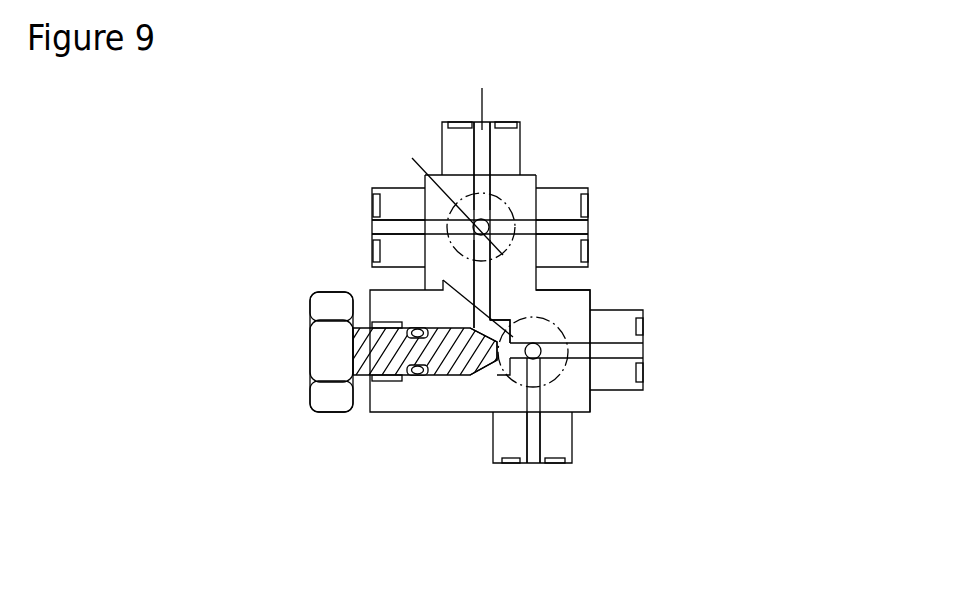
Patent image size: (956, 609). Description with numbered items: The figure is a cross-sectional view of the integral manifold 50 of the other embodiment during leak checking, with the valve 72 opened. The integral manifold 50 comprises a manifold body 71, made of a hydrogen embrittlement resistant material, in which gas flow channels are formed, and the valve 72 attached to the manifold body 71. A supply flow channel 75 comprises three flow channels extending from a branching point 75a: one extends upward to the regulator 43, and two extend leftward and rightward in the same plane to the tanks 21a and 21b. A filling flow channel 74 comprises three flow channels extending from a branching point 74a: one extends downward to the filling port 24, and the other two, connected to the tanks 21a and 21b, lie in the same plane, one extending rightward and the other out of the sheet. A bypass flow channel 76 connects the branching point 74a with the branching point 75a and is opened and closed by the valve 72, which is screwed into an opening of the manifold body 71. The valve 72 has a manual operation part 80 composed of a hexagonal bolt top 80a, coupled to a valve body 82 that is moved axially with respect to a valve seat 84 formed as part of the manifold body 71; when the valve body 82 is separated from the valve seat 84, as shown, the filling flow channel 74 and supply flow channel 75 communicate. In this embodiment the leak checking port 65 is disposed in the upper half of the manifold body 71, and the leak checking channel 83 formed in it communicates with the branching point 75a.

The integral manifold 50 is at (540, 70).
The leak checking port 65 is at (503, 190).
The manifold body 71 is at (596, 282).
The valve 72 is at (336, 425).
The filling flow channel 74 is at (580, 350).
The branching point 74a is at (540, 358).
The supply flow channel 75 is at (510, 230).
The branching point 75a is at (448, 195).
The bypass flow channel 76 is at (477, 317).
The manual operation part 80 is at (347, 416).
The hexagonal bolt top 80a is at (327, 362).
The valve body 82 is at (438, 357).
The leak checking channel 83 is at (497, 242).
The valve seat 84 is at (483, 367).
The regulator 43 is at (482, 88).
The tank 21a is at (425, 279).
The tank 21b is at (600, 227).
The filling port 24 is at (535, 451).